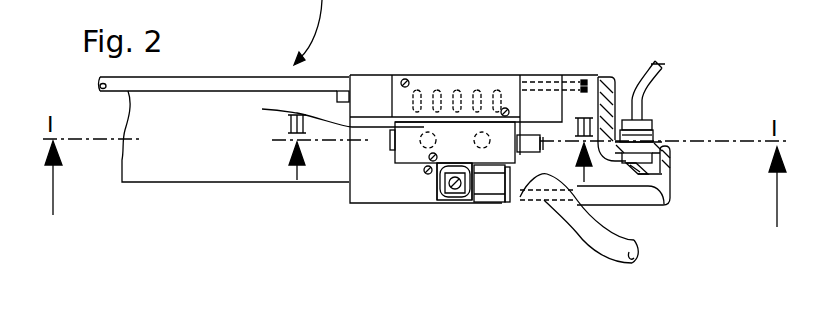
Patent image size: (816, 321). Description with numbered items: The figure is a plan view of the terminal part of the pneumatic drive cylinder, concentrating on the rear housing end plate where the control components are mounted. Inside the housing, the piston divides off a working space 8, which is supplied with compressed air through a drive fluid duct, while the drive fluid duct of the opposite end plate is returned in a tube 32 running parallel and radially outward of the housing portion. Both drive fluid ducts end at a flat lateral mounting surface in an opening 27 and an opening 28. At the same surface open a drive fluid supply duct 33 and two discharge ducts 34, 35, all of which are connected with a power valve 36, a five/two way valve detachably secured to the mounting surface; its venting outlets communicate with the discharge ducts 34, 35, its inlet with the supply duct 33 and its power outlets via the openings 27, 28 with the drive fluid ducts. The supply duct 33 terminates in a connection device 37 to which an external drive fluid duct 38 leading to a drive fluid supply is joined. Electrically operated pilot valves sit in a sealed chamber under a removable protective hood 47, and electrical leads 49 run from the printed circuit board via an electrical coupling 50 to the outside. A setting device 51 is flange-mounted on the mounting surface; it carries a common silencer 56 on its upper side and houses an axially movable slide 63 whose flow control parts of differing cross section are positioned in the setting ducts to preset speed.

The working space 8 is at (205, 150).
The opening 27 is at (436, 88).
The opening 28 is at (415, 88).
The tube 32 is at (227, 83).
The drive fluid supply duct 33 is at (458, 88).
The discharge duct 34 is at (477, 88).
The discharge duct 35 is at (502, 88).
The power valve 36 is at (390, 77).
The connection device 37 is at (463, 194).
The drive fluid duct 38 is at (589, 237).
The protective hood 47 is at (671, 156).
The electrical leads 49 is at (667, 175).
The electrical coupling 50 is at (654, 128).
The setting device 51 is at (404, 164).
The silencer 56 is at (329, 111).
The slide 63 is at (529, 135).